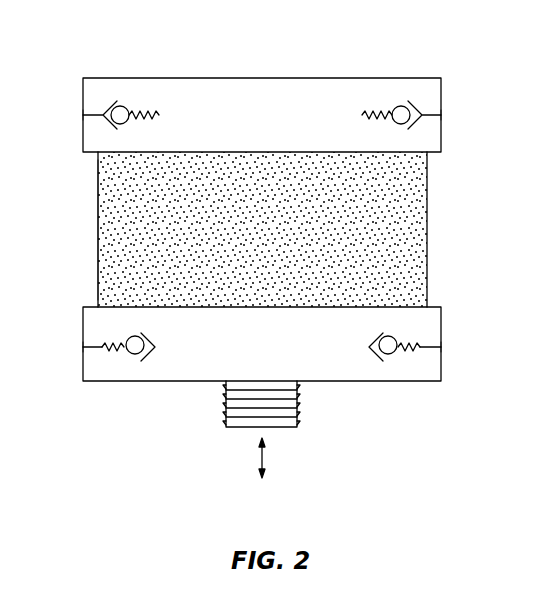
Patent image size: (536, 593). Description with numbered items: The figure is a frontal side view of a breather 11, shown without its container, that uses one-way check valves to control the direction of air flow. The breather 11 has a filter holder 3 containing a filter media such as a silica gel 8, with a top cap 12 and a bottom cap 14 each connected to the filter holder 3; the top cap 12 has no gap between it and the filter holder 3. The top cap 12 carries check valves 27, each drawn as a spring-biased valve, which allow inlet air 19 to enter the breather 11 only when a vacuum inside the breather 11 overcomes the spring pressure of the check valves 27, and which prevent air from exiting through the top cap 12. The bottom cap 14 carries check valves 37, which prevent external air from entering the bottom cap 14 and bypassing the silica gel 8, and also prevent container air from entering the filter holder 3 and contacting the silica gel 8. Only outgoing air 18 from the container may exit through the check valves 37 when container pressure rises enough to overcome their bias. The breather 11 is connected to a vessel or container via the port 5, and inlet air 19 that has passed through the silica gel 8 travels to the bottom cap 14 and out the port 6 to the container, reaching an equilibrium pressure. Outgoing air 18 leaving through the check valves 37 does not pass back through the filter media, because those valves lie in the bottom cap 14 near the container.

The breather 11 is at (452, 60).
The top cap 12 is at (443, 135).
The bottom cap 14 is at (415, 381).
The filter holder 3 is at (427, 230).
The silica gel 8 is at (98, 229).
The check valves of the top cap 27 is at (122, 106).
The check valves of the bottom cap 37 is at (133, 354).
The inlet air 19 is at (72, 112).
The outgoing air 18 is at (70, 347).
The port 5 is at (297, 398).
The port 6 is at (262, 475).